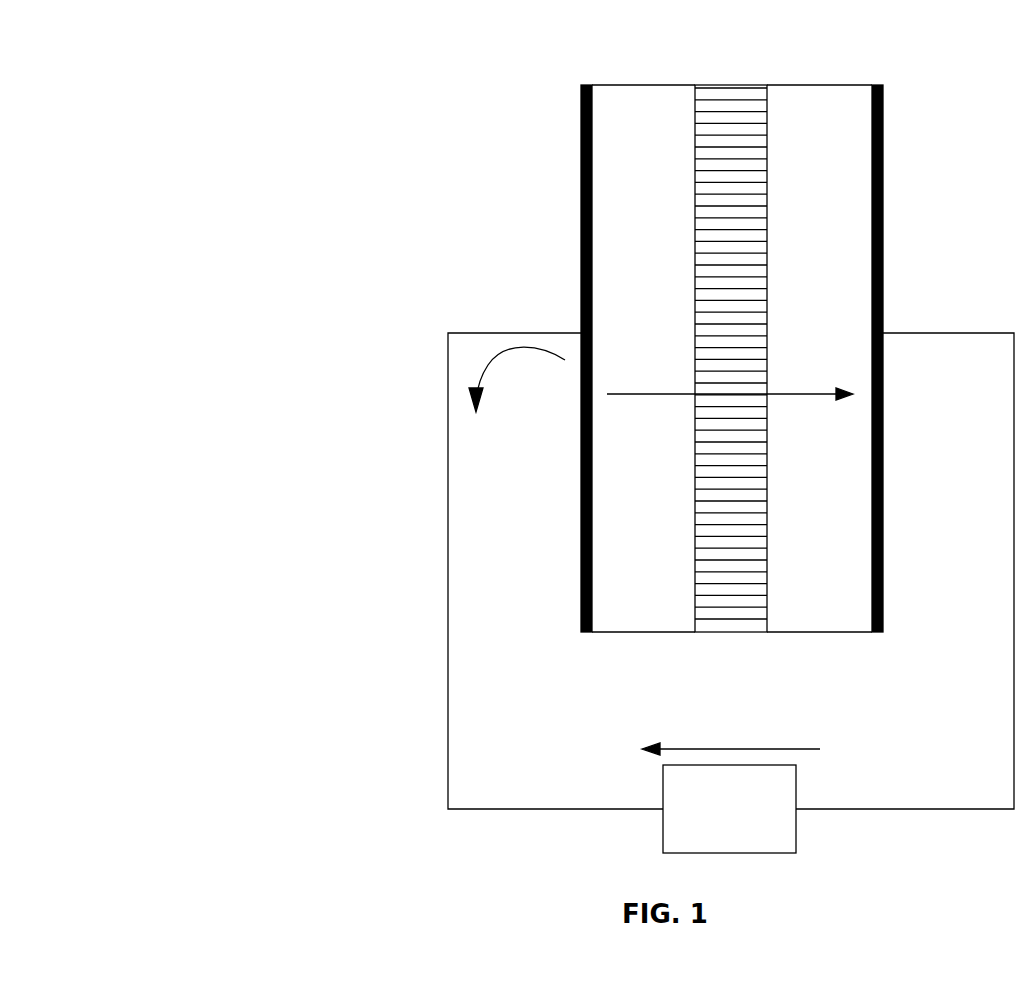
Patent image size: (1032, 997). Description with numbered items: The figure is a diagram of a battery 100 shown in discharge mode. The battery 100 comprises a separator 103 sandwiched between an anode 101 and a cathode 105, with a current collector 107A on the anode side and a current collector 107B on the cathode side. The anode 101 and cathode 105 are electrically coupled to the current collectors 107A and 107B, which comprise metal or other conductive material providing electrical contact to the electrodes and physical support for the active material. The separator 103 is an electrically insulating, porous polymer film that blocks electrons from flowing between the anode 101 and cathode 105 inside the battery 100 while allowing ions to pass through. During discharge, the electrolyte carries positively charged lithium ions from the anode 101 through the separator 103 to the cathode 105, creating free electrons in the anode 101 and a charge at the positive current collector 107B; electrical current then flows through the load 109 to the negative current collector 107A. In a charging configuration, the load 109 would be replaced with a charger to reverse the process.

The battery 100 is at (277, 185).
The anode 101 is at (662, 296).
The separator 103 is at (733, 85).
The cathode 105 is at (839, 297).
The negative current collector 107A is at (578, 108).
The positive current collector 107B is at (884, 108).
The load 109 is at (750, 834).